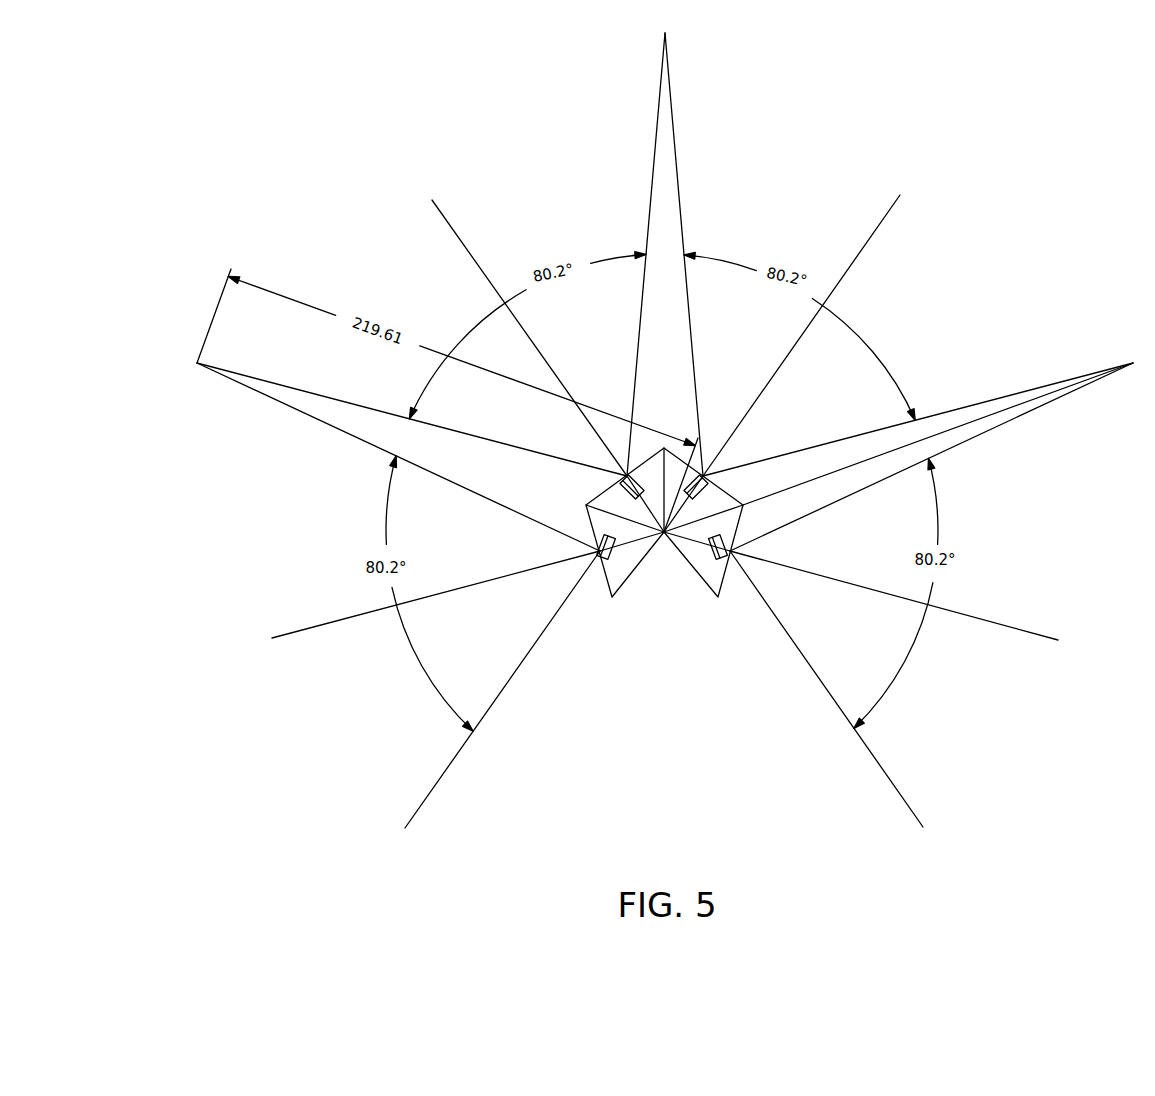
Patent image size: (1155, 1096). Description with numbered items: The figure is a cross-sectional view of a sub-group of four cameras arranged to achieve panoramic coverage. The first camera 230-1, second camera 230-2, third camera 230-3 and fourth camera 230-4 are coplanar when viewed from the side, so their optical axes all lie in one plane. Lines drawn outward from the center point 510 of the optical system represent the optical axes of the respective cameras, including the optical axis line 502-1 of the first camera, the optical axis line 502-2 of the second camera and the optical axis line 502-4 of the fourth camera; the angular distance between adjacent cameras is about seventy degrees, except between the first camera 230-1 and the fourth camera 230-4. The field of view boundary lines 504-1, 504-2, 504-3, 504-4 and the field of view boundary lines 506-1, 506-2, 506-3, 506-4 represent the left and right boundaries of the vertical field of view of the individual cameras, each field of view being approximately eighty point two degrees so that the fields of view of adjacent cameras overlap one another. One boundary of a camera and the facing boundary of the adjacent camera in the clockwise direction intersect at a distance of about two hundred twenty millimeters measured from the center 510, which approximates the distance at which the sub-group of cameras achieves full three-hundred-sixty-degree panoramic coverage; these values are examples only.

The center point of the optical system 510 is at (657, 548).
The first camera 230-1 is at (600, 545).
The second camera 230-2 is at (622, 480).
The third camera 230-3 is at (710, 478).
The fourth camera 230-4 is at (720, 546).
The optical axis line 502-1 is at (348, 618).
The optical axis line 502-2 is at (452, 230).
The optical axis line 502-4 is at (986, 617).
The field of view boundary line 504-1 is at (413, 810).
The field of view boundary line 504-2 is at (234, 367).
The field of view boundary line 504-3 is at (676, 153).
The field of view boundary line 504-4 is at (1013, 417).
The field of view boundary line 506-1 is at (292, 407).
The field of view boundary line 506-2 is at (652, 153).
The field of view boundary line 506-3 is at (995, 398).
The field of view boundary line 506-4 is at (892, 778).